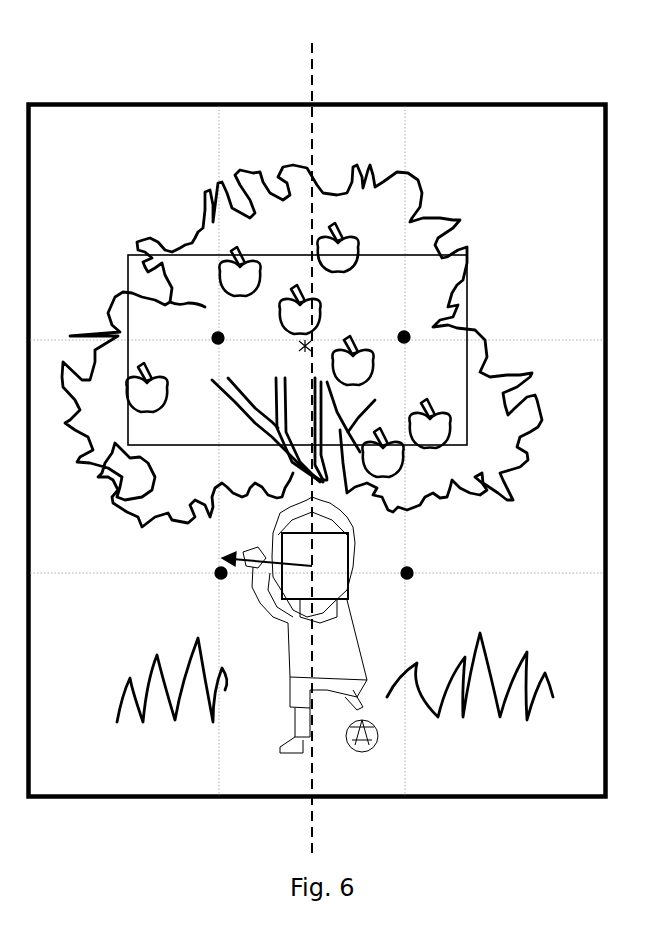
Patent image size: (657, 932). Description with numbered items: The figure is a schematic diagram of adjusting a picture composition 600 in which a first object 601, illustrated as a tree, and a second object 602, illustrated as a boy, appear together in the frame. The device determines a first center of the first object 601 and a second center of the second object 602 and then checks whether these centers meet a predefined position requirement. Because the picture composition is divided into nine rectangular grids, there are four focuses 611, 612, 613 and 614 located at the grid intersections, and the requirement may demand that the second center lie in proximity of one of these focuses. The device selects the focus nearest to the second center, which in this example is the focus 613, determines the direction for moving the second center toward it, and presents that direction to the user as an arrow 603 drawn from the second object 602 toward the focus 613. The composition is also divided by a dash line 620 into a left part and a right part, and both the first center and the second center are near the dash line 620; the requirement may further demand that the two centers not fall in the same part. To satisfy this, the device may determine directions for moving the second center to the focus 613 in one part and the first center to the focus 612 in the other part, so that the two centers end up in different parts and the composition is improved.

The image 600 is at (113, 78).
The first object 601 is at (309, 256).
The second object 602 is at (348, 599).
The arrow 603 is at (230, 554).
The focus 611 is at (214, 334).
The focus 612 is at (400, 332).
The focus 613 is at (218, 580).
The focus 614 is at (410, 579).
The dash line 620 is at (317, 64).